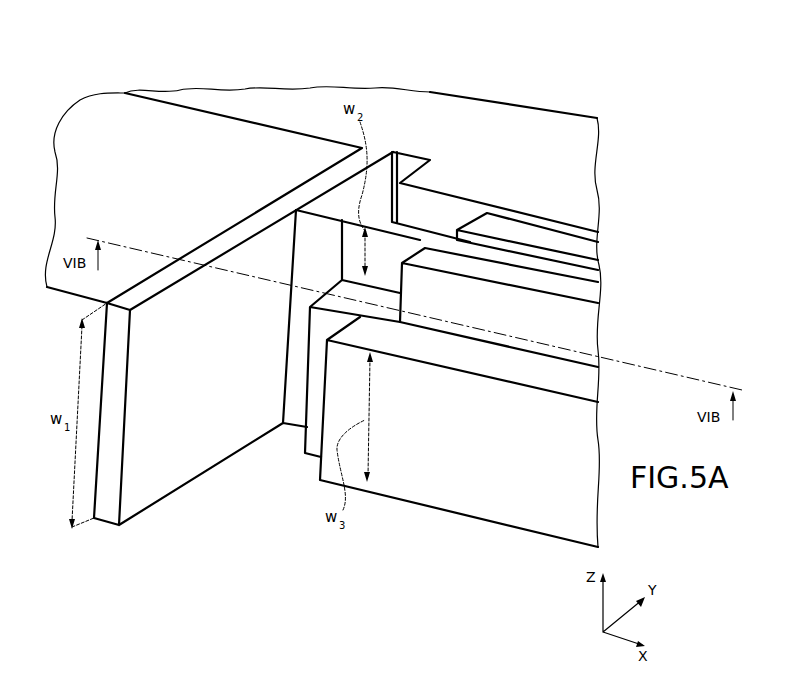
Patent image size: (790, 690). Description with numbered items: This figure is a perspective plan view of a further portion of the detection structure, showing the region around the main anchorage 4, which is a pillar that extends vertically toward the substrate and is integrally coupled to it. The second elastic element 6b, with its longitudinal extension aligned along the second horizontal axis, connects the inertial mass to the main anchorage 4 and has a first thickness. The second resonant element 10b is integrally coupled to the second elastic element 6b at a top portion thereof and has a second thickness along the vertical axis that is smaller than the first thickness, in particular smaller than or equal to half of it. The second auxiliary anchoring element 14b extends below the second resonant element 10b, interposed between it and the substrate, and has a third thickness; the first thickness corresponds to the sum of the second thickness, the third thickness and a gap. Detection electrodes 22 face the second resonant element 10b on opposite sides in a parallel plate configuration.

The main anchorage 4 is at (110, 148).
The second elastic element 6b is at (168, 453).
The second resonant element 10b is at (402, 250).
The second auxiliary anchoring element 14b is at (440, 468).
The detection electrodes 22 is at (568, 290).